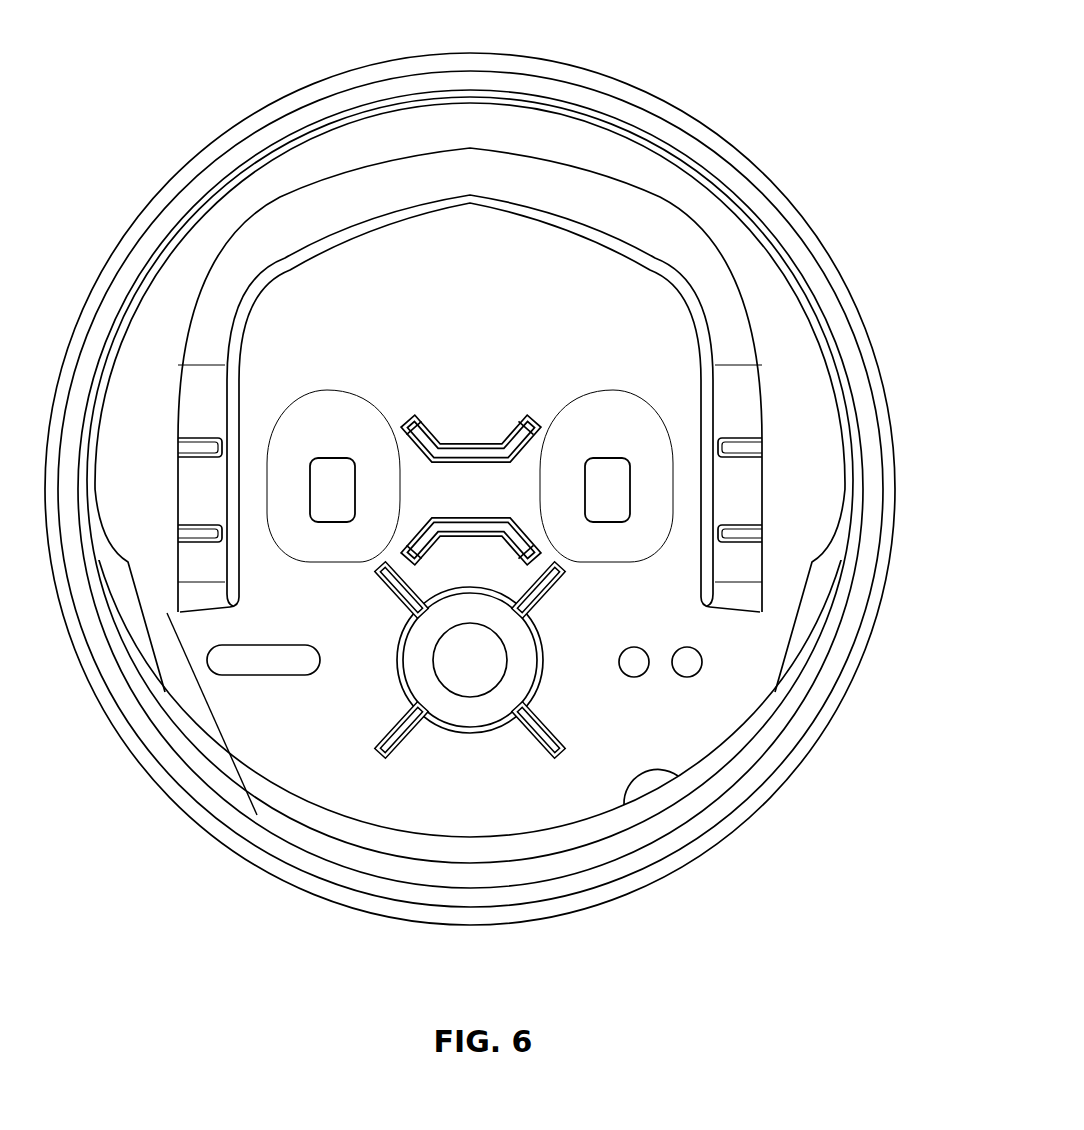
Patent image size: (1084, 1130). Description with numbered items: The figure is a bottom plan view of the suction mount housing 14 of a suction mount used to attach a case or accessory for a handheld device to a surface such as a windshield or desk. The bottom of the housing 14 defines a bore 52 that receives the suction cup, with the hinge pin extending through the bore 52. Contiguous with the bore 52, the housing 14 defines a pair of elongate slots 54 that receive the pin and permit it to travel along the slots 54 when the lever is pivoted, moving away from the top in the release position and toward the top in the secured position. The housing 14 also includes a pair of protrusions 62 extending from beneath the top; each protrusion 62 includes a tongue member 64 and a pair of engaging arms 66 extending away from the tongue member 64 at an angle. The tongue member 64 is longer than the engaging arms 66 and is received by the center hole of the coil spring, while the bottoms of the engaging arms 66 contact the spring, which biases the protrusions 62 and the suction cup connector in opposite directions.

The suction mount housing 14 is at (806, 212).
The bore 52 is at (622, 806).
The elongate slots 54 is at (178, 488).
The protrusions 62 is at (463, 445).
The tongue member 64 is at (488, 430).
The engaging arms 66 is at (413, 422).